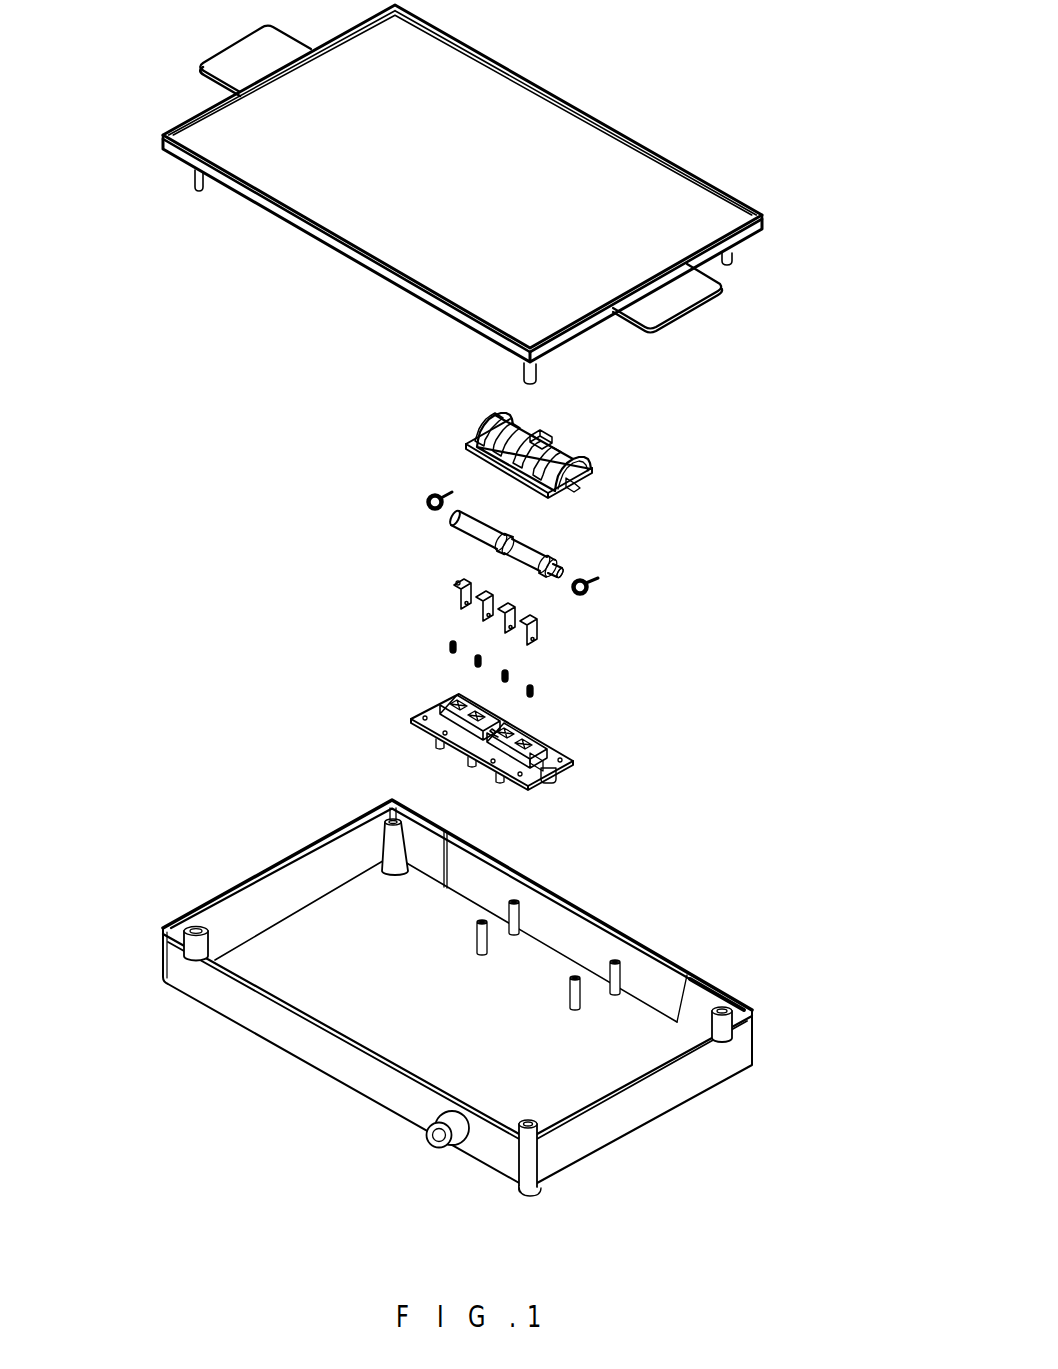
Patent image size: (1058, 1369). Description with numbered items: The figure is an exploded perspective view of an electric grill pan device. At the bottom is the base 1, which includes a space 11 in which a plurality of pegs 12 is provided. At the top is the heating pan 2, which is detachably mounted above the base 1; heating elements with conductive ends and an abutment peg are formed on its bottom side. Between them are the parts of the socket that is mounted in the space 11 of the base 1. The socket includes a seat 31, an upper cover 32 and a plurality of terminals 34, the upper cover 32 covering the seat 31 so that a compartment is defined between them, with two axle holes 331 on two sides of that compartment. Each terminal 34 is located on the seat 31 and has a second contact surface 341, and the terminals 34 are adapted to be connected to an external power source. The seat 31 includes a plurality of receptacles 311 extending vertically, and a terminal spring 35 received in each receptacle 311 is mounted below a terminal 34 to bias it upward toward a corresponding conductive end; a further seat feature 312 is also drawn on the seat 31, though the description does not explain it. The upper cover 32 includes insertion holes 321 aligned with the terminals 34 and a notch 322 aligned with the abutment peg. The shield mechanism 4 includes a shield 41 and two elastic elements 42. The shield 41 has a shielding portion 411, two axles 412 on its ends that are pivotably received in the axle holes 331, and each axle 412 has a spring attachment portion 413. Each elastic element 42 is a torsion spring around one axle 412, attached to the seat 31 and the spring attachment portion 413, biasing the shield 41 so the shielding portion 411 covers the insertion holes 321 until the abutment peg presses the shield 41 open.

The base 1 is at (457, 998).
The space 11 is at (538, 1088).
The pegs 12 is at (518, 915).
The heating pan 2 is at (608, 95).
The seat 31 is at (545, 737).
The receptacles 311 is at (534, 745).
The switch contact 312 is at (500, 735).
The upper cover 32 is at (573, 440).
The insertion holes 321 is at (568, 458).
The notch 322 is at (542, 436).
The axle holes 331 is at (575, 484).
The terminals 34 is at (444, 594).
The second contact surface 341 is at (460, 582).
The terminal spring 35 is at (449, 647).
The shield mechanism 4 is at (517, 521).
The shield 41 is at (470, 531).
The shielding portion 411 is at (473, 515).
The axles 412 is at (549, 578).
The spring attachment portion 413 is at (563, 570).
The elastic element 42 is at (599, 587).